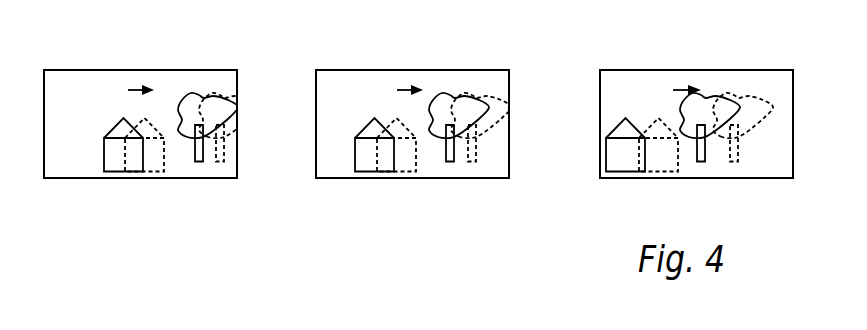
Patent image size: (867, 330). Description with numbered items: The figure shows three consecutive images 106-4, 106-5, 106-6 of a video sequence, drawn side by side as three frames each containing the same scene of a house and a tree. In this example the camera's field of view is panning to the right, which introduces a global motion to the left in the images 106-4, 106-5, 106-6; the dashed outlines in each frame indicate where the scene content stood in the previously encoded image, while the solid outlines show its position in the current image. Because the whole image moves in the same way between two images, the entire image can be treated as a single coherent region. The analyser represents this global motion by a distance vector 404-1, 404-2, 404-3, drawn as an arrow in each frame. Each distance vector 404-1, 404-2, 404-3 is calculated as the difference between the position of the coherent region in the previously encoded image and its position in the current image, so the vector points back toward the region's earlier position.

The image 106-4 is at (115, 70).
The image 106-5 is at (410, 70).
The image 106-6 is at (613, 70).
The distance vector 404-1 is at (152, 90).
The distance vector 404-2 is at (422, 90).
The distance vector 404-3 is at (700, 90).